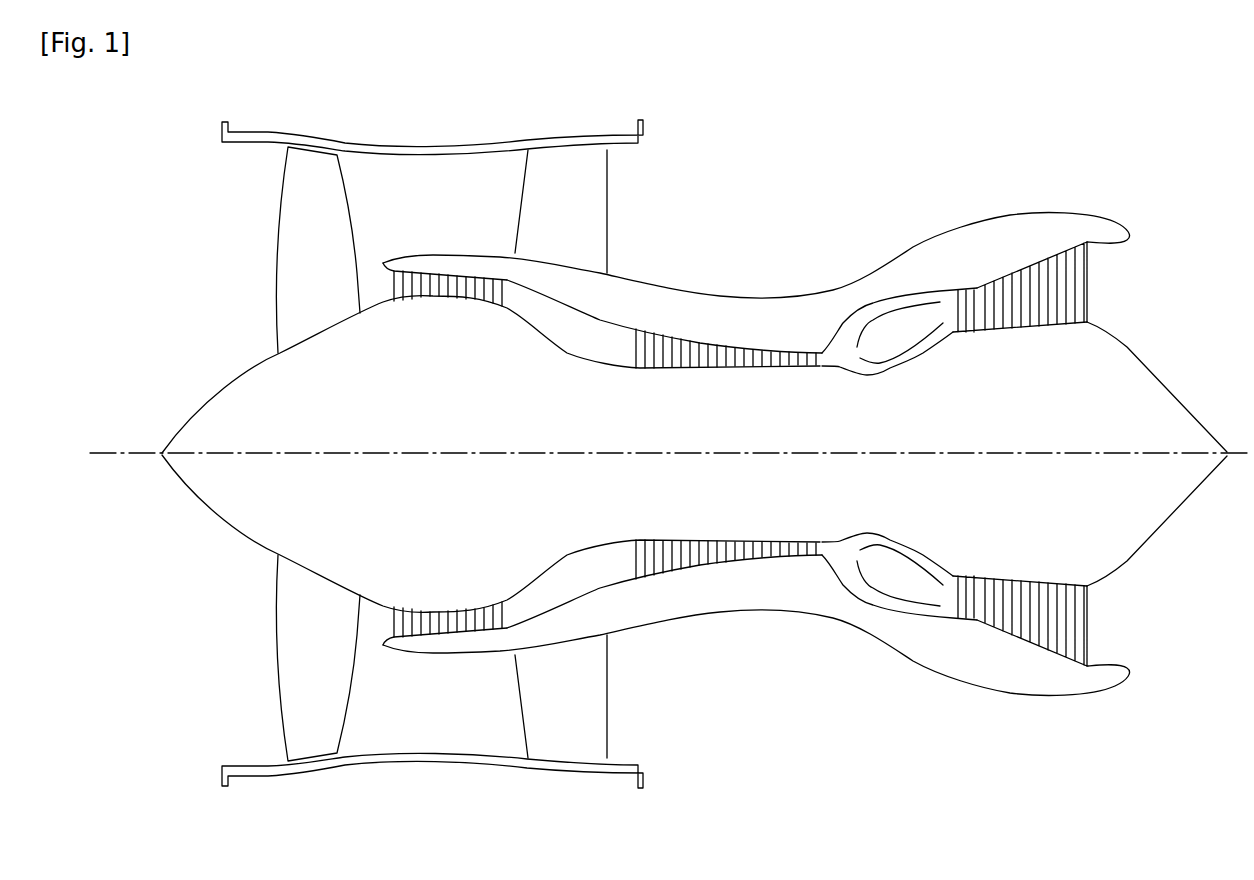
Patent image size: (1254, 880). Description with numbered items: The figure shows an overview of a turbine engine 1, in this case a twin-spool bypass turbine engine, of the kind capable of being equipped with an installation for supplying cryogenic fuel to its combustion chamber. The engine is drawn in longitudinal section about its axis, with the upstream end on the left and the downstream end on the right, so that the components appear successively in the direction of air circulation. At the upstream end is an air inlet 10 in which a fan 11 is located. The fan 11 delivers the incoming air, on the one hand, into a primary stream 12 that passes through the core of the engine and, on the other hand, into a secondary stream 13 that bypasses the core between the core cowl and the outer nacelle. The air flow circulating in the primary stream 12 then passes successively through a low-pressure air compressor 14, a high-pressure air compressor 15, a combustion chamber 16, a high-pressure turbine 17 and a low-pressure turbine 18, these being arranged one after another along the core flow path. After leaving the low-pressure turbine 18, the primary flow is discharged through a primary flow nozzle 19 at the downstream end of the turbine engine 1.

The turbine engine 1 is at (808, 128).
The air inlet 10 is at (215, 350).
The fan 11 is at (330, 264).
The primary stream 12 is at (381, 288).
The secondary stream 13 is at (433, 212).
The low-pressure air compressor 14 is at (456, 284).
The high-pressure air compressor 15 is at (703, 349).
The combustion chamber 16 is at (906, 345).
The high-pressure turbine 17 is at (976, 307).
The low-pressure turbine 18 is at (1073, 278).
The primary flow nozzle 19 is at (1100, 287).